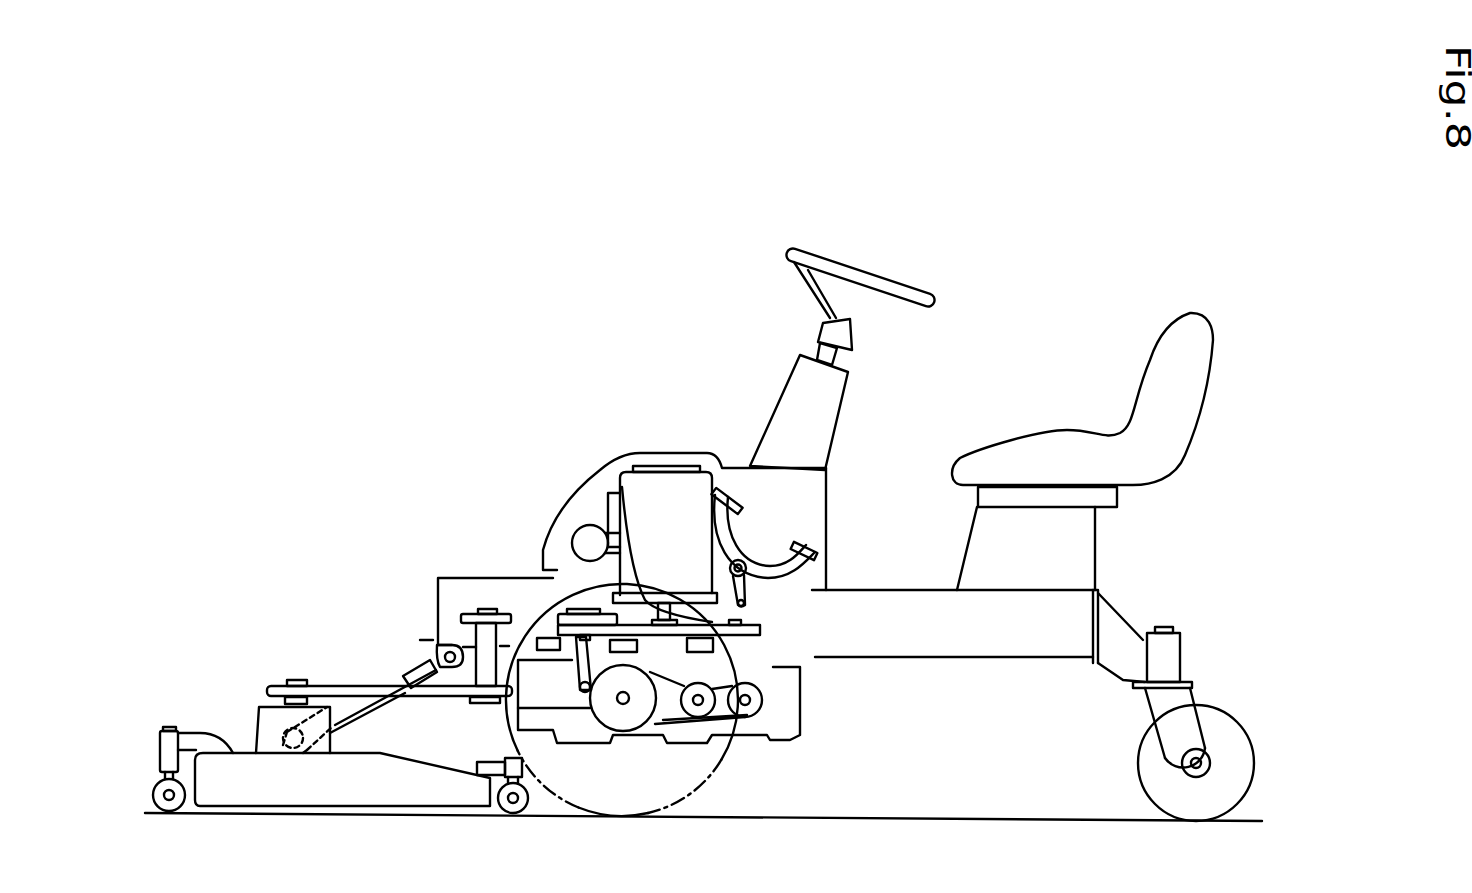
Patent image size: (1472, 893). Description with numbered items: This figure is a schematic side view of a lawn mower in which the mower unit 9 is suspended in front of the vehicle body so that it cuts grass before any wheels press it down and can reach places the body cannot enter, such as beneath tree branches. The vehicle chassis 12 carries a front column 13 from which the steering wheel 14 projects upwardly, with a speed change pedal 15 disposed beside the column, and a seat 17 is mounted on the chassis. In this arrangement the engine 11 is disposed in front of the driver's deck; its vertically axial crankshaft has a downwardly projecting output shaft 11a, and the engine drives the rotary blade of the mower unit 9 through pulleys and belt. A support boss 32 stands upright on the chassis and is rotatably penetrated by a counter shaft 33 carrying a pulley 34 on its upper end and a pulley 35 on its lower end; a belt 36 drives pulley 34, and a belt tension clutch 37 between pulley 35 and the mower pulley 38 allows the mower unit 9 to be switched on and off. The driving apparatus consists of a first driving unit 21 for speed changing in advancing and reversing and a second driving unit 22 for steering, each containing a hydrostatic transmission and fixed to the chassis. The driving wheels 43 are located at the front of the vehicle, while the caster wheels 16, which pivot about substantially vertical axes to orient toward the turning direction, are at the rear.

The mower unit 9 is at (212, 663).
The engine 11 is at (664, 483).
The output shaft 11a is at (622, 487).
The vehicle chassis 12 is at (977, 653).
The front column 13 is at (782, 393).
The steering wheel 14 is at (907, 283).
The speed change pedal 15 is at (797, 548).
The caster wheels 16 is at (1140, 767).
The seat 17 is at (1167, 323).
The first driving unit 21 is at (572, 775).
The second driving unit 22 is at (820, 746).
The support boss 32 is at (438, 648).
The counter shaft 33 is at (488, 608).
The pulley 34 is at (467, 610).
The pulley 35 is at (465, 703).
The belt 36 is at (525, 615).
The belt tension clutch 37 is at (357, 684).
The pulley 38 is at (275, 686).
The driving wheels 43 is at (683, 807).